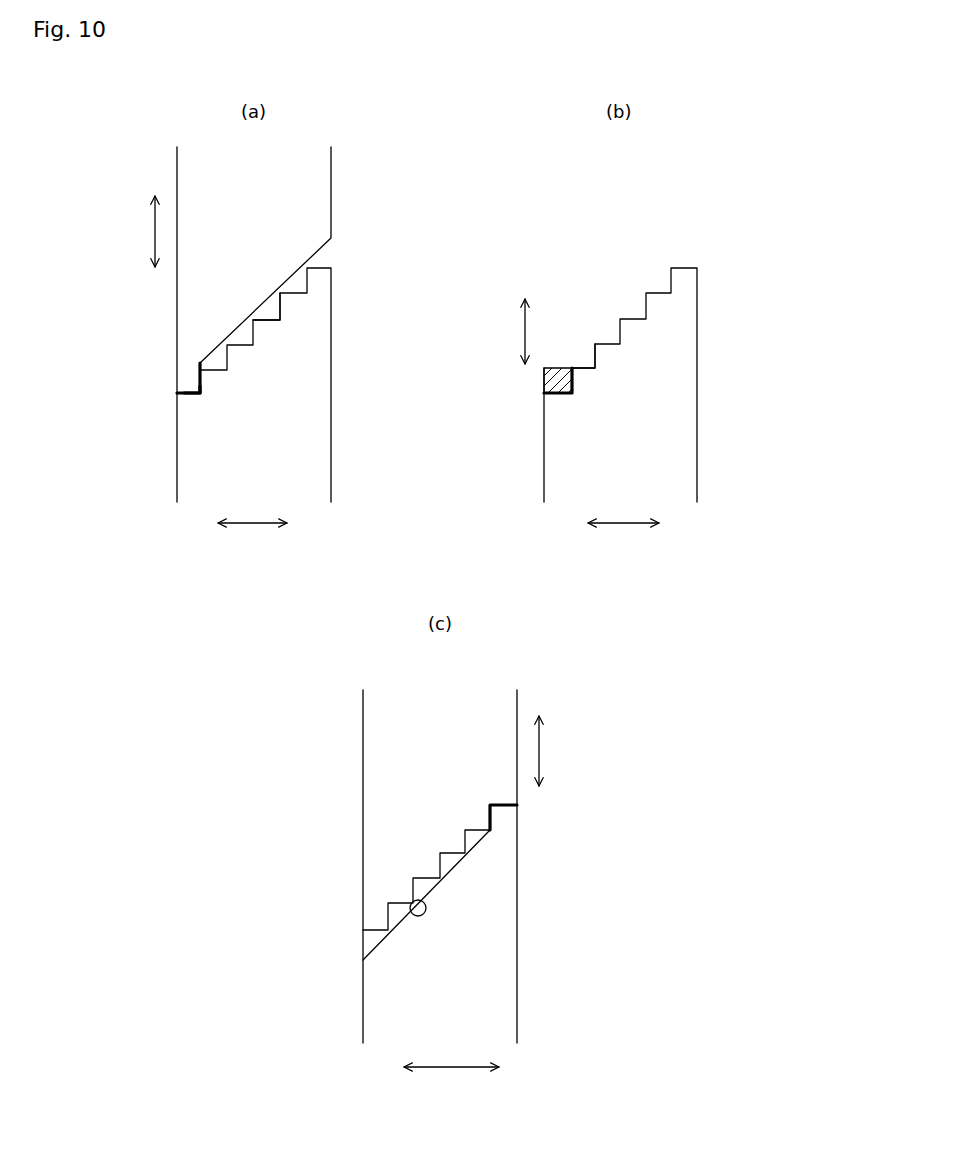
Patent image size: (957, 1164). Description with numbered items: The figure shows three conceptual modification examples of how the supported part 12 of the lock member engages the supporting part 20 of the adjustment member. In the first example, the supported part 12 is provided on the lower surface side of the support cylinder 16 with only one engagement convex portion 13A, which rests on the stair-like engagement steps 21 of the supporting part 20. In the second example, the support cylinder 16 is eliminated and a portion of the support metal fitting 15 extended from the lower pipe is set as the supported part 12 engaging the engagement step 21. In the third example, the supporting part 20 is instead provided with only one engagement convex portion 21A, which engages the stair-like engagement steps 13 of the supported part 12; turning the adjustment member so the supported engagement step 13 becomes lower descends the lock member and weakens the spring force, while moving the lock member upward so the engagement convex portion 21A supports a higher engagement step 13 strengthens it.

The supported part 12 is at (331, 183).
The supporting part 20 is at (318, 382).
The support cylinder 16 is at (177, 318).
The engagement convex portion 13A is at (197, 393).
The engagement step 21 is at (267, 320).
The support metal fitting 15 is at (544, 381).
The engagement step 13 is at (424, 898).
The engagement convex portion 21A is at (510, 822).